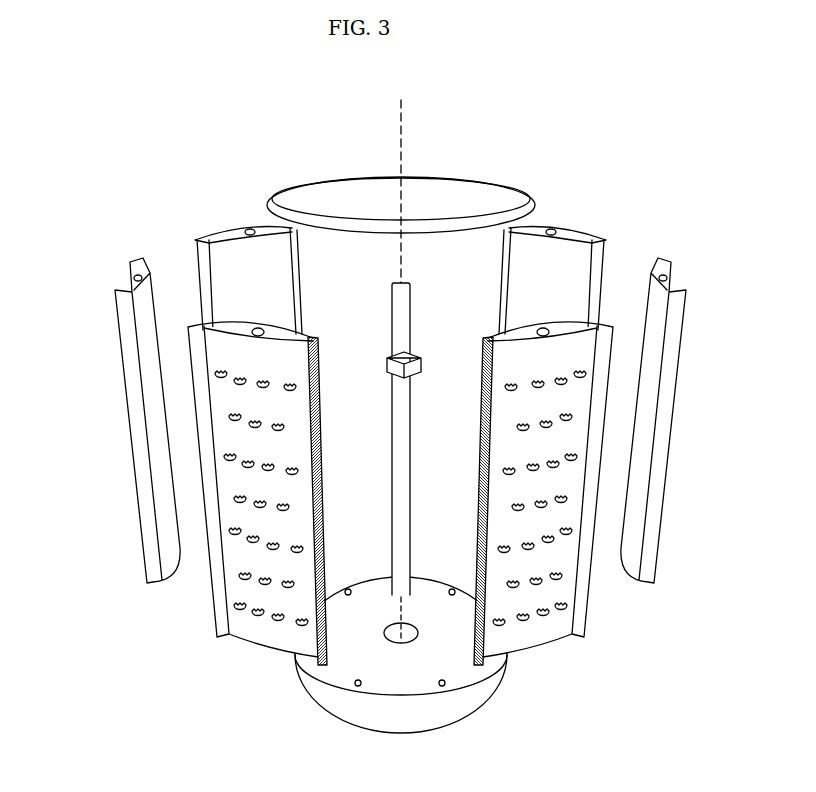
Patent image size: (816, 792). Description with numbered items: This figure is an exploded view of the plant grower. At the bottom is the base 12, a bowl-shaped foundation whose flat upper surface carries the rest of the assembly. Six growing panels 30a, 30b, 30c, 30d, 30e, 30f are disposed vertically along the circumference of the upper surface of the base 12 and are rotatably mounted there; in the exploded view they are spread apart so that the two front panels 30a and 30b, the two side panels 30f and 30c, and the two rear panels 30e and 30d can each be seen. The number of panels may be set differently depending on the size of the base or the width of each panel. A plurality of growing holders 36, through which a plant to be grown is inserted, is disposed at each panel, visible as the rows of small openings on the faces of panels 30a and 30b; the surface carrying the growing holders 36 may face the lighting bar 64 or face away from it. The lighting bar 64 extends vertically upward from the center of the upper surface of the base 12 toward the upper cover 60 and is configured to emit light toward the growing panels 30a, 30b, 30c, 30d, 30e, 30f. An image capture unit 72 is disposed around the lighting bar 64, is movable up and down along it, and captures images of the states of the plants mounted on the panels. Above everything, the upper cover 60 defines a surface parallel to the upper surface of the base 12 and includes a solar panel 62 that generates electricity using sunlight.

The base 12 is at (466, 692).
The growing panel 30a is at (280, 645).
The growing panel 30b is at (602, 519).
The growing panel 30c is at (653, 510).
The growing panel 30d is at (567, 240).
The growing panel 30e is at (224, 240).
The growing panel 30f is at (119, 388).
The growing holder 36 is at (575, 412).
The upper cover 60 is at (432, 173).
The solar panel 62 is at (511, 182).
The lighting bar 64 is at (410, 458).
The image capture unit 72 is at (421, 359).